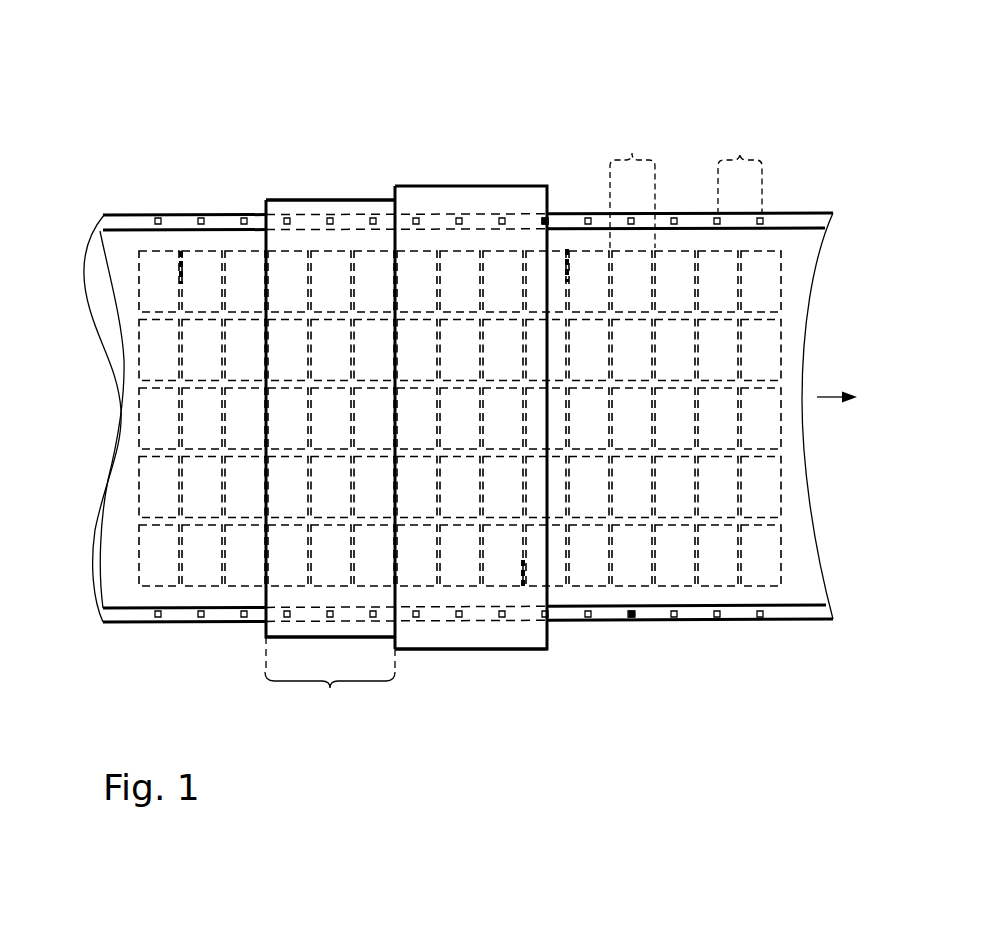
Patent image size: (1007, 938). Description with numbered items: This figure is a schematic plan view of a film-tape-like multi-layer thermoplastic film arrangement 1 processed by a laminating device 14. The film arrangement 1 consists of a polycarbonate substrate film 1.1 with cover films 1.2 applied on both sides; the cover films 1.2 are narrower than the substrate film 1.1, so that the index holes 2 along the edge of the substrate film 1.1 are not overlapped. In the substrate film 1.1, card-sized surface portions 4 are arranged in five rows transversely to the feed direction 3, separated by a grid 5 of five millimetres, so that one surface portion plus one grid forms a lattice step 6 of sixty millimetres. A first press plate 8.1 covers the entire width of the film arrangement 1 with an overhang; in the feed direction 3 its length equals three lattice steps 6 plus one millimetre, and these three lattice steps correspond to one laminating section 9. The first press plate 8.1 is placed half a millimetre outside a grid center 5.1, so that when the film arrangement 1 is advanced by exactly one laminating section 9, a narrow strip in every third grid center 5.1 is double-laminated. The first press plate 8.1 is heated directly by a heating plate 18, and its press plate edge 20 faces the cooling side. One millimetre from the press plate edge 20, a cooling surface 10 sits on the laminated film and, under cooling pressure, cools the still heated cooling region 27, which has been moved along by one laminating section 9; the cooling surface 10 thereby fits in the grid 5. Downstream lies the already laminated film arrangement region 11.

The film arrangement 1 is at (802, 432).
The substrate film 1.1 is at (117, 425).
The cover films 1.2 is at (120, 337).
The index holes 2 is at (632, 617).
The feed direction 3 is at (838, 378).
The surface portions 4 is at (245, 276).
The grid 5 is at (181, 250).
The grid center 5.1 is at (567, 250).
The lattice step 6 is at (686, 182).
The first press plate 8.1 is at (308, 200).
The laminating section 9 is at (330, 683).
The cooling surface 10 is at (440, 633).
The laminated film arrangement region 11 is at (796, 197).
The device 14 is at (671, 42).
The heating plate 18 is at (308, 200).
The press plate edge 20 is at (395, 275).
The cooling region 27 is at (482, 155).